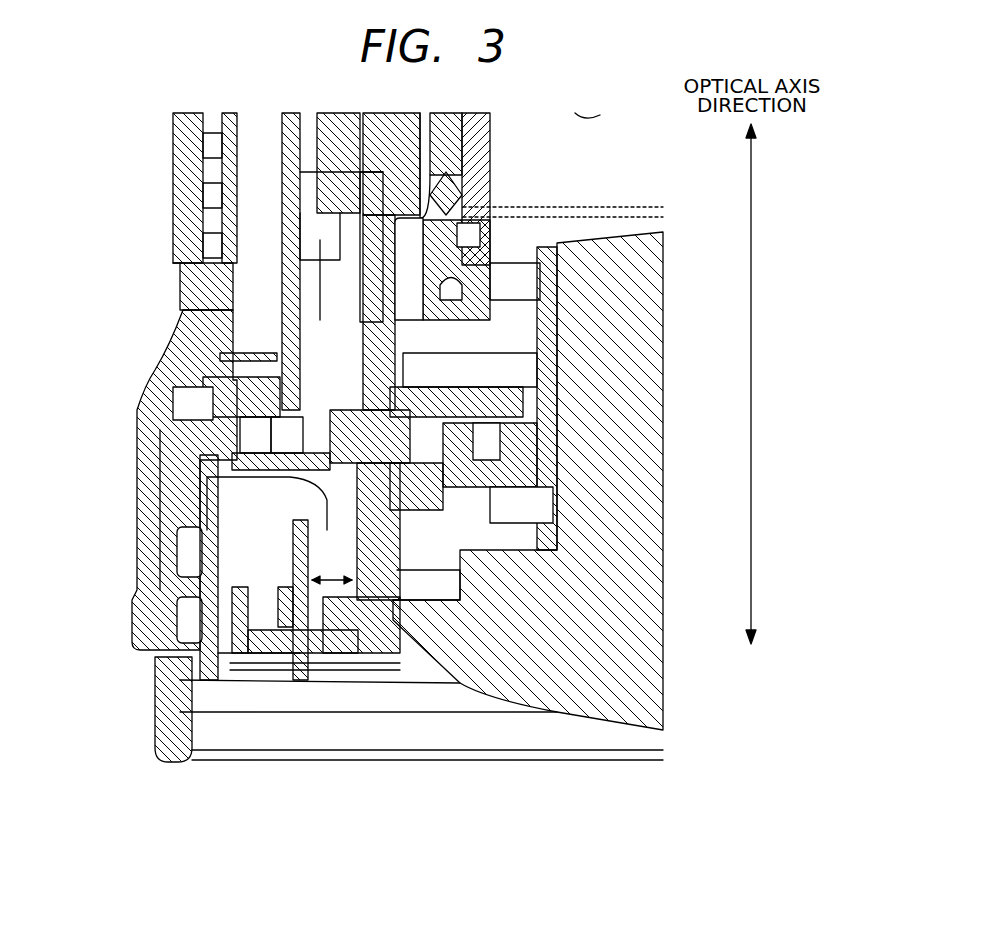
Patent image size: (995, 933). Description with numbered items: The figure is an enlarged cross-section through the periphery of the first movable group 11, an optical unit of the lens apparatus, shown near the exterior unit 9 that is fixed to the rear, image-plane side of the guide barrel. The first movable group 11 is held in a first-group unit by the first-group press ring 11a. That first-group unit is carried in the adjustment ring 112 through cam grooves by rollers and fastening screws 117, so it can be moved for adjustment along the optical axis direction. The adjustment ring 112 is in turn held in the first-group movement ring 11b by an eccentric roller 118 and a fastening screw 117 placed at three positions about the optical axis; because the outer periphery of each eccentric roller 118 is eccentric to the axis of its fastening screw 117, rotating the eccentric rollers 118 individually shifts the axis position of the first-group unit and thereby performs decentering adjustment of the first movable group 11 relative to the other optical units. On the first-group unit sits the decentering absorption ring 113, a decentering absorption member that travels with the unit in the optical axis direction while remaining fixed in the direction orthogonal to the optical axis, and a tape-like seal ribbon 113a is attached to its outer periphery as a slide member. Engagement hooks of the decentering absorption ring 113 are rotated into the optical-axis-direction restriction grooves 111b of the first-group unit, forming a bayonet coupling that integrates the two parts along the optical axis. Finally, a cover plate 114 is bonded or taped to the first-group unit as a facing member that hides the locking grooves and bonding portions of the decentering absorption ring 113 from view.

The exterior unit 9 is at (153, 716).
The first movable group 11 is at (583, 723).
The first-group press ring 11a is at (363, 660).
The first-group movement ring 11b is at (365, 292).
The adjustment ring 112 is at (377, 400).
The decentering absorption ring 113 is at (153, 663).
The seal ribbon 113a is at (175, 617).
The cover plate 114 is at (255, 653).
The fastening screw 117 is at (340, 432).
The eccentric roller 118 is at (330, 490).
The optical-axis-direction restriction groove 111b is at (333, 645).